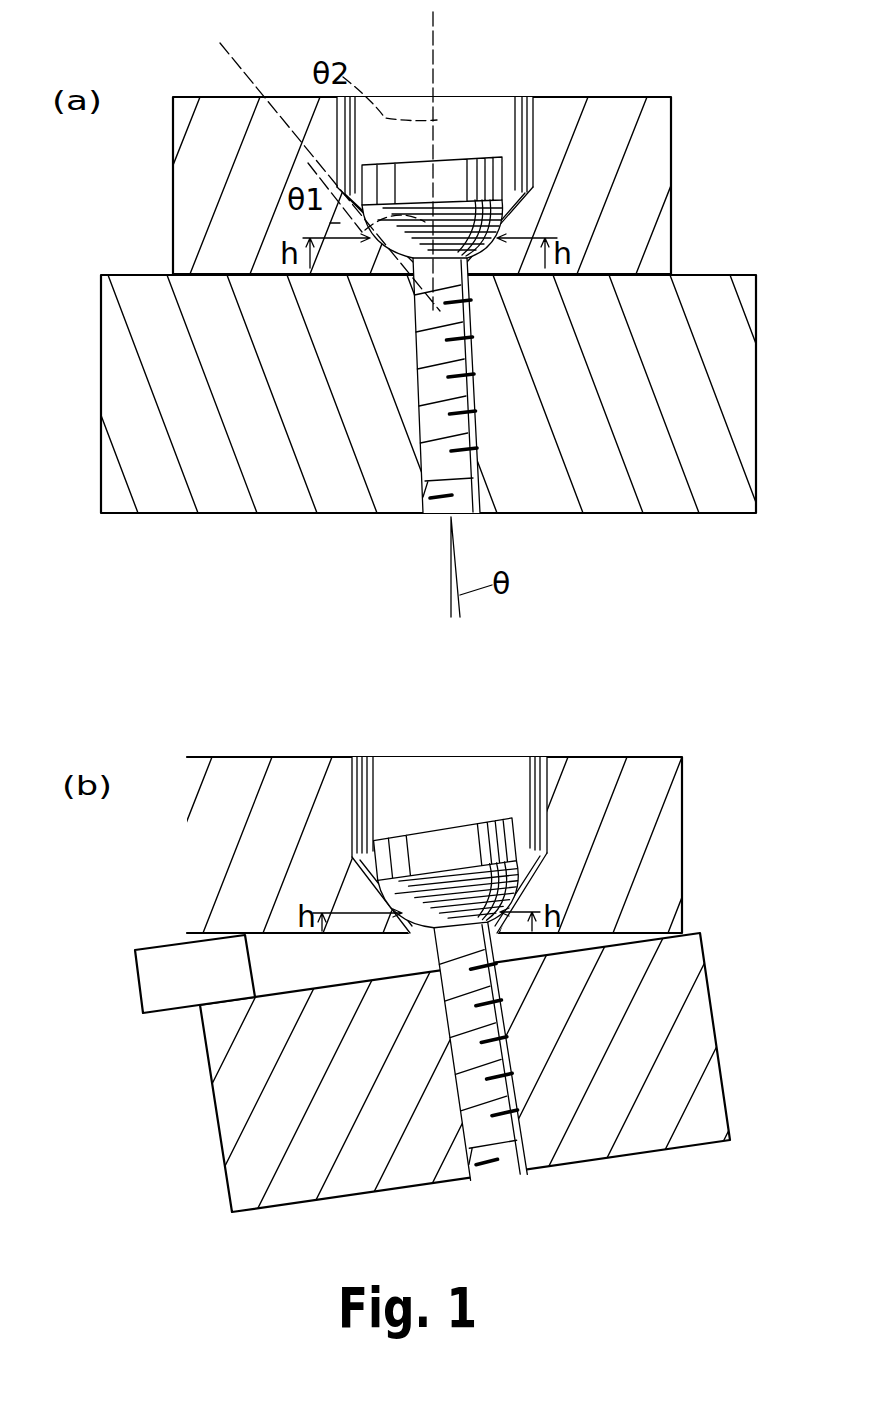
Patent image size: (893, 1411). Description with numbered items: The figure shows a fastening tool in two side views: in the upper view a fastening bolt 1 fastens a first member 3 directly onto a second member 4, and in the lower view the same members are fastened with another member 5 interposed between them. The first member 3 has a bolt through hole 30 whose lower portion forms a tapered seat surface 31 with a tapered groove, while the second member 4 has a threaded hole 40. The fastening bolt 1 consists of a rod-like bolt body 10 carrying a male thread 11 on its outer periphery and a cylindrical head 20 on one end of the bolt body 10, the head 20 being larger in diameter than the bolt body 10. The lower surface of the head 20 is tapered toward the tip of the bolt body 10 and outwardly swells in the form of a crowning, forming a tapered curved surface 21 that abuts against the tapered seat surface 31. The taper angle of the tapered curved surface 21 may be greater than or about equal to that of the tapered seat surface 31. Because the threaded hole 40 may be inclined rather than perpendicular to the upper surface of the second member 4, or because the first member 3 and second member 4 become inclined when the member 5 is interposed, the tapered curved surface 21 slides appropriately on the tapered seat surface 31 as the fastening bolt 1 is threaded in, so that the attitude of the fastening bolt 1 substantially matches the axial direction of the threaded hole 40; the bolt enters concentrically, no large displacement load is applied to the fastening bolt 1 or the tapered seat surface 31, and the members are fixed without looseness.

The fastening bolt 1 is at (470, 612).
The first member 3 is at (446, 495).
The second member 4 is at (738, 375).
The other member 5 is at (170, 965).
The bolt body 10 is at (518, 741).
The male thread 11 is at (473, 367).
The head 20 is at (477, 158).
The tapered curved surface 21 is at (400, 263).
The bolt through hole 30 is at (474, 495).
The tapered seat surface 31 is at (520, 214).
The threaded hole 40 is at (465, 510).